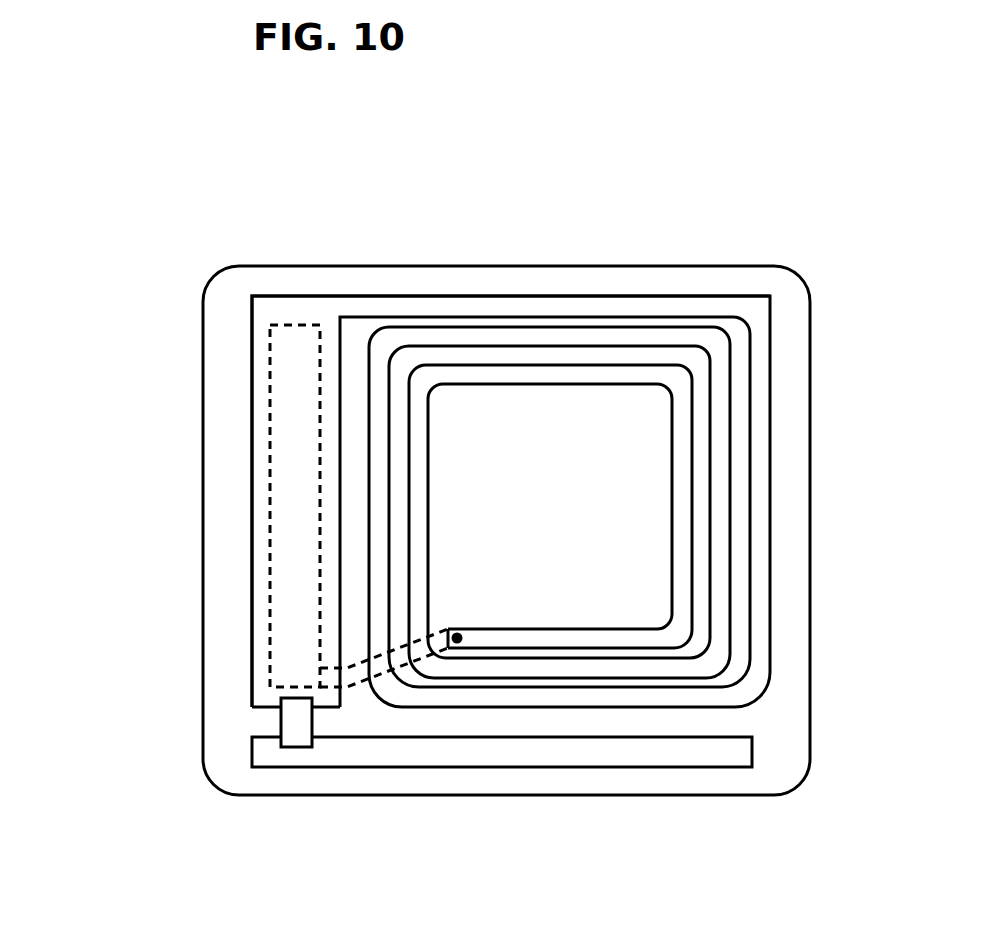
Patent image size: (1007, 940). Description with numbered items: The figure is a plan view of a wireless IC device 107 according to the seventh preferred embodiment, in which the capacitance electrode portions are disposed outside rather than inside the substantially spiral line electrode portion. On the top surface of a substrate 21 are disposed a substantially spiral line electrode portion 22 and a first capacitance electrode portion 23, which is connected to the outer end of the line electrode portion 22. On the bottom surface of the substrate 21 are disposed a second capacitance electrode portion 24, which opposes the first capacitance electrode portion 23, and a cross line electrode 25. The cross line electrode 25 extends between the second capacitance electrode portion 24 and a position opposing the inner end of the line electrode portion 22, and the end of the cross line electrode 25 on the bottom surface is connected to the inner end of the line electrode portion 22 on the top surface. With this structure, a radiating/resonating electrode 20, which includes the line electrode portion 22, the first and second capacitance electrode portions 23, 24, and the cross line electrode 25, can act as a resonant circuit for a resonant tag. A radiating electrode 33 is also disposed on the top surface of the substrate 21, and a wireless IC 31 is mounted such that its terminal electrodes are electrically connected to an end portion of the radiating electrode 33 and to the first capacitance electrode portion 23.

The wireless IC device 107 is at (742, 178).
The radiating/resonating electrode 20 is at (105, 410).
The substrate 21 is at (797, 268).
The line electrode portion 22 is at (380, 470).
The first capacitance electrode portion 23 is at (252, 501).
The second capacitance electrode portion 24 is at (282, 549).
The cross line electrode 25 is at (358, 665).
The wireless IC 31 is at (280, 719).
The radiating electrode 33 is at (583, 748).